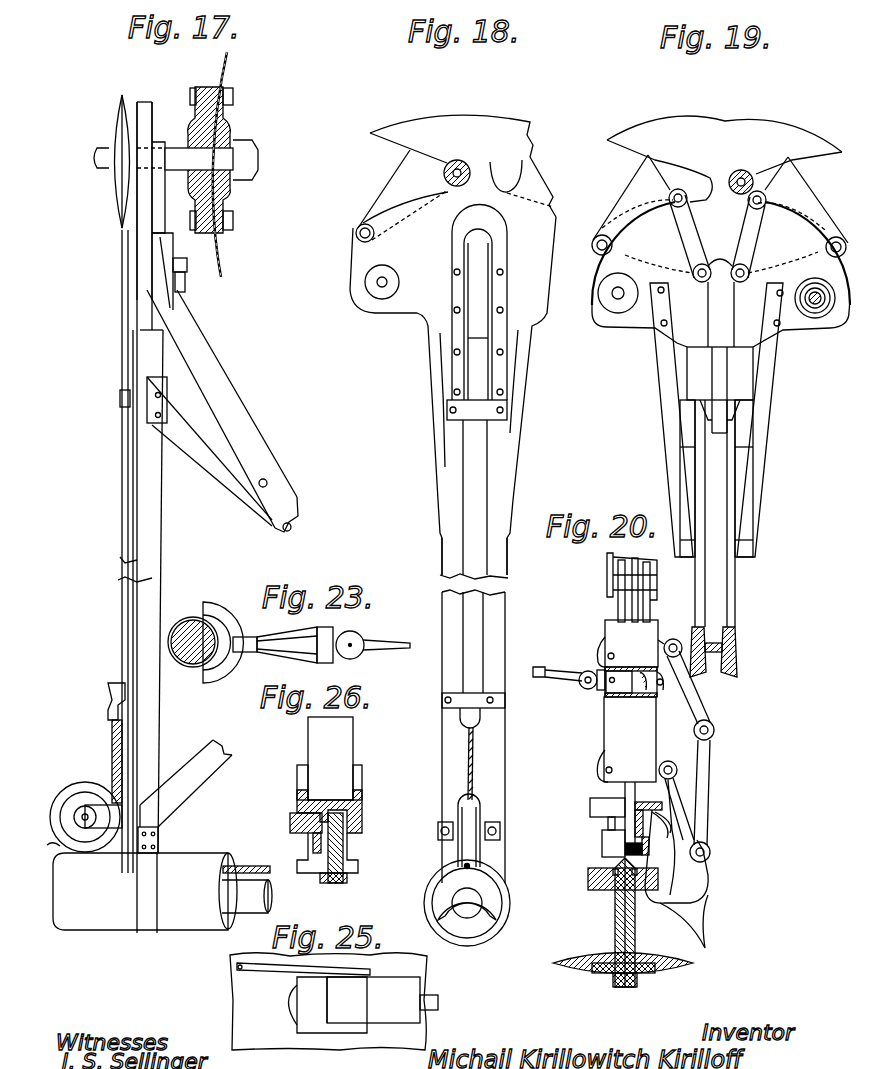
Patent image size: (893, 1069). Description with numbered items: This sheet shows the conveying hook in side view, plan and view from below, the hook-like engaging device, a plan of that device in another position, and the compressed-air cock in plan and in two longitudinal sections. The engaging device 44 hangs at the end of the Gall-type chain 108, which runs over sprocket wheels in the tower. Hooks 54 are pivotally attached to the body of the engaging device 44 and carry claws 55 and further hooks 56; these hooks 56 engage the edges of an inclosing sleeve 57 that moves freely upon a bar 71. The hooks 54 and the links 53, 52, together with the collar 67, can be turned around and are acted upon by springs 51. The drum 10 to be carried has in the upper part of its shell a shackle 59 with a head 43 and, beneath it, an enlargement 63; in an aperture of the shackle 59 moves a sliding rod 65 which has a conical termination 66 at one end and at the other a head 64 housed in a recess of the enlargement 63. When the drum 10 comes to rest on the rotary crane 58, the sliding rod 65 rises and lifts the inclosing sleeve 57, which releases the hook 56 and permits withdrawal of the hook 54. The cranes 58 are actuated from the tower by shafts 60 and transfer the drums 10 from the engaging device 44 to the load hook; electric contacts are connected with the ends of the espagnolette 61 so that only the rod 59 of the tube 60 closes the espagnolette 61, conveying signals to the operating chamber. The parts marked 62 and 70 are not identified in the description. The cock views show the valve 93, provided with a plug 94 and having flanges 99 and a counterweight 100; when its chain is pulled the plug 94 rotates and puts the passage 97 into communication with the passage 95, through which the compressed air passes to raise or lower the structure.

In FIG. 17, the drum 10 is at (222, 243).
In FIG. 20, the head 43 is at (590, 880).
In FIG. 20, the hook-like engaging device 44 is at (610, 735).
In FIG. 23, the hook-like engaging device 44 is at (228, 635).
In FIG. 20, the spring 51 is at (540, 677).
In FIG. 20, the link 52 is at (698, 712).
In FIG. 20, the link 53 is at (705, 768).
In FIG. 20, the hook 54 is at (697, 885).
In FIG. 23, the hook 54 is at (358, 637).
In FIG. 20, the claw 55 is at (680, 912).
In FIG. 23, the claw 55 is at (378, 650).
In FIG. 20, the hook 56 is at (656, 840).
In FIG. 20, the inclosing sleeve 57 is at (597, 807).
In FIG. 23, the inclosing sleeve 57 is at (240, 602).
In FIG. 17, the rotary crane 58 is at (148, 108).
In FIG. 18, the rotary crane 58 is at (398, 140).
In FIG. 19, the rotary crane 58 is at (637, 147).
In FIG. 18, the shackle 59 is at (470, 173).
In FIG. 19, the shackle 59 is at (752, 172).
In FIG. 20, the shackle 59 is at (615, 985).
In FIG. 17, the shaft 60 is at (186, 866).
In FIG. 18, the shaft 60 is at (432, 920).
In FIG. 17, the espagnolette 61 is at (154, 146).
In FIG. 18, the espagnolette 61 is at (400, 187).
In FIG. 19, the espagnolette 61 is at (630, 194).
In FIG. 17, the rope 62 is at (114, 740).
In FIG. 18, the rope 62 is at (468, 744).
In FIG. 26, the rope 62 is at (312, 848).
In FIG. 17, the enlargement 63 is at (116, 130).
In FIG. 20, the enlargement 63 is at (568, 970).
In FIG. 20, the head 64 is at (640, 990).
In FIG. 20, the sliding rod 65 is at (625, 917).
In FIG. 20, the conical termination 66 is at (622, 862).
In FIG. 20, the collar 67 is at (608, 686).
In FIG. 18, the frame 70 is at (473, 485).
In FIG. 20, the bar 71 is at (618, 795).
In FIG. 26, the valve 93 is at (308, 850).
In FIG. 25, the valve 93 is at (290, 1008).
In FIG. 26, the plug 94 is at (362, 812).
In FIG. 26, the passage 95 is at (292, 825).
In FIG. 26, the passage 97 is at (333, 883).
In FIG. 26, the flange 99 is at (297, 775).
In FIG. 25, the flange 99 is at (366, 974).
In FIG. 26, the counterweight 100 is at (308, 748).
In FIG. 25, the counterweight 100 is at (392, 990).
In FIG. 20, the chain 108 is at (622, 597).